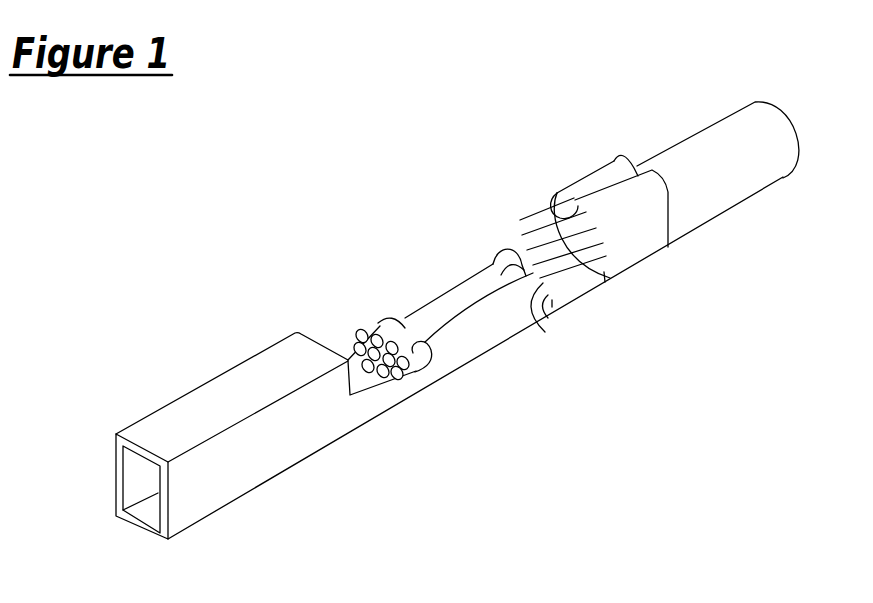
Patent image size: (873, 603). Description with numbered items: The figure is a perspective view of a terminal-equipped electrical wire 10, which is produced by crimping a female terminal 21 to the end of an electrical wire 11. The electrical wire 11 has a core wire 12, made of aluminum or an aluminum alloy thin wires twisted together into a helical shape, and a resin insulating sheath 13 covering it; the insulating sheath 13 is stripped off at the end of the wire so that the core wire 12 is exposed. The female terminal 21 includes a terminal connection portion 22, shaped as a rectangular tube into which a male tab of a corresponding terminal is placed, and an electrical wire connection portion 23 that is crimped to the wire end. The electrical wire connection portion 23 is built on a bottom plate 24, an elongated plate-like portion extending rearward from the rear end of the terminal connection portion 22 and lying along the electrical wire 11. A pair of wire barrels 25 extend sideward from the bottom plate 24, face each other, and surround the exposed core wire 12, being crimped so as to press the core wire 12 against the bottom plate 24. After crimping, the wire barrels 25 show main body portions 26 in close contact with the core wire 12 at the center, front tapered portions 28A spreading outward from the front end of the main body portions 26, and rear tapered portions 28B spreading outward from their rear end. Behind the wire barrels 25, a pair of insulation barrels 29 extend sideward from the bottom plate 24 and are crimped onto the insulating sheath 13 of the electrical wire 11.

The terminal-equipped electrical wire 10 is at (513, 470).
The electrical wire 11 is at (686, 343).
The core wire 12 is at (562, 267).
The insulating sheath 13 is at (688, 205).
The female terminal 21 is at (255, 318).
The terminal connection portion 22 is at (210, 393).
The electrical wire connection portion 23 is at (437, 184).
The bottom plate 24 is at (515, 333).
The wire barrels 25 is at (493, 313).
The main body portions 26 is at (448, 331).
The front tapered portions 28A is at (405, 318).
The rear tapered portions 28B is at (535, 324).
The insulation barrels 29 is at (633, 196).